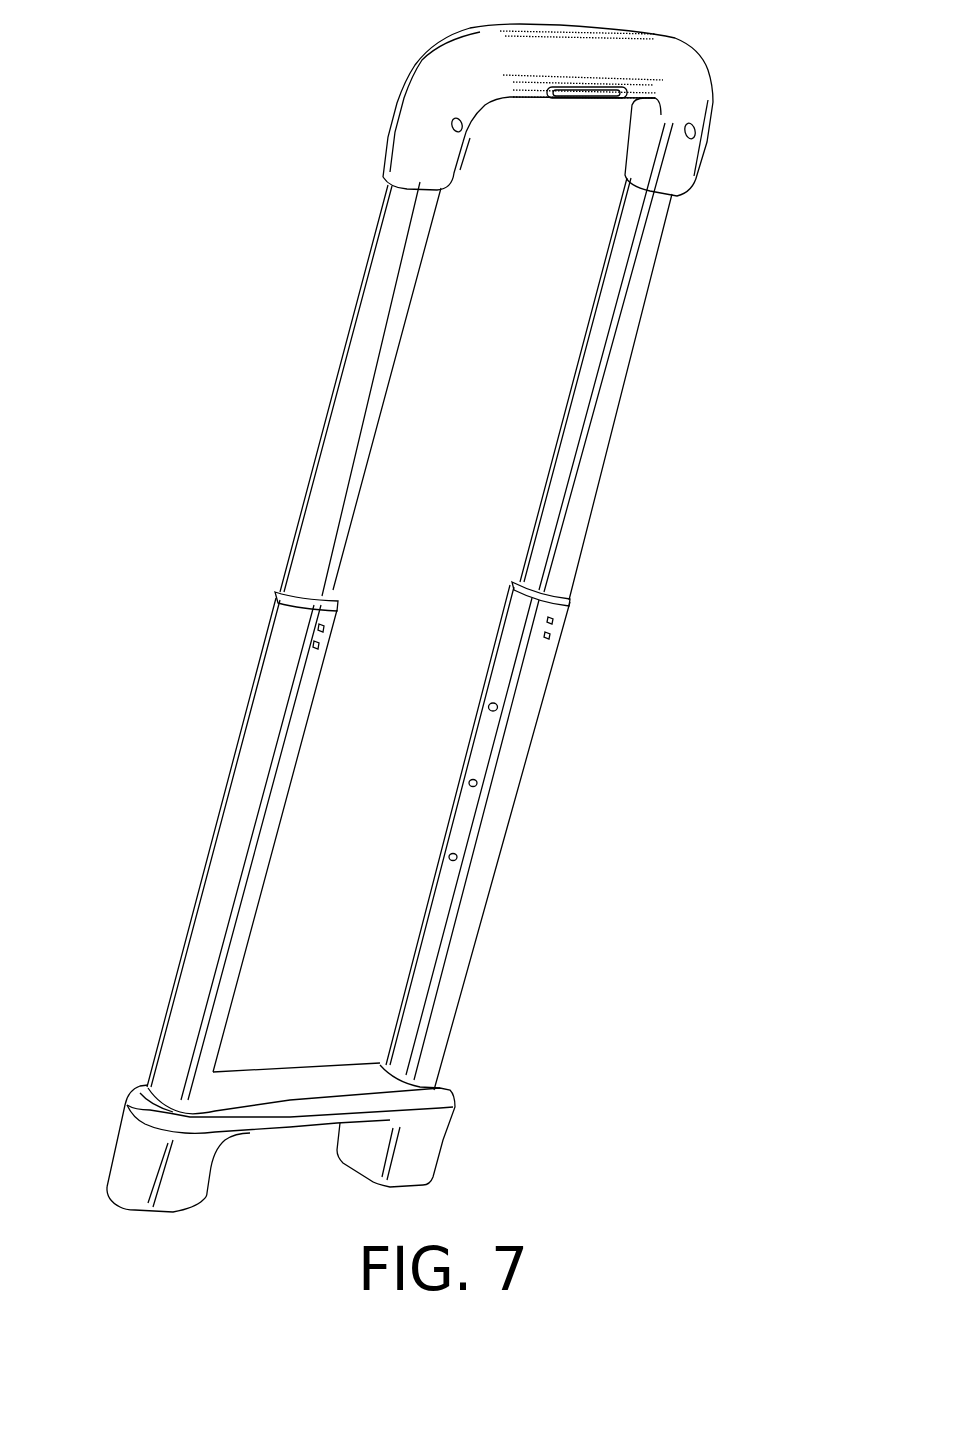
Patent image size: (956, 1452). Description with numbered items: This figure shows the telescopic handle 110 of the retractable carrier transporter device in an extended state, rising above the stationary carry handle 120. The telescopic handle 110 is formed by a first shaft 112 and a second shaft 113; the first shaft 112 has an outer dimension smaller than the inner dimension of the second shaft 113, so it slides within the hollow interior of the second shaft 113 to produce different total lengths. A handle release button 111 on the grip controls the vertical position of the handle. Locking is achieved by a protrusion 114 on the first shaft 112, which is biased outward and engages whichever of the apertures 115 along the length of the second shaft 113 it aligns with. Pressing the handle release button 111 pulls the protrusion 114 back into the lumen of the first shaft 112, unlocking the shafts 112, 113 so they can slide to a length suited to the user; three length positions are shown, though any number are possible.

The telescopic handle 110 is at (413, 62).
The handle release button 111 is at (593, 93).
The first shaft 112 is at (350, 335).
The second shaft 113 is at (233, 765).
The protrusion 114 is at (487, 703).
The apertures 115 is at (450, 857).
The carry handle 120 is at (125, 1107).